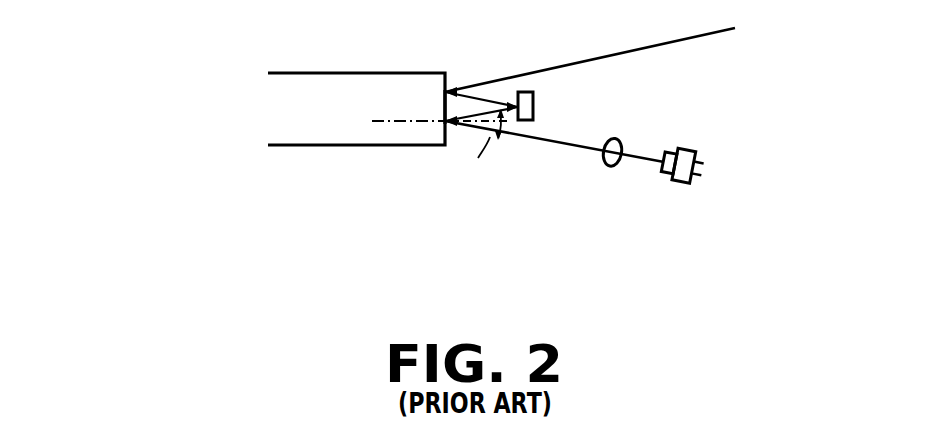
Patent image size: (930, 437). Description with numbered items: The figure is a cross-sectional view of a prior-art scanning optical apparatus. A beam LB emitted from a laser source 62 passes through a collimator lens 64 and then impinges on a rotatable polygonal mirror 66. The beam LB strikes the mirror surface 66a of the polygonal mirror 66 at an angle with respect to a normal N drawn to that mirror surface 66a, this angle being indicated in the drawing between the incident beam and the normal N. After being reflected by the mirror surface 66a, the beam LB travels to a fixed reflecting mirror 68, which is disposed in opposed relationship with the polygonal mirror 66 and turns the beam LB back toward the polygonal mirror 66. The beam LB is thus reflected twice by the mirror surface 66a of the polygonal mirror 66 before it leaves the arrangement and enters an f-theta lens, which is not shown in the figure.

The laser source 62 is at (681, 182).
The collimator lens 64 is at (610, 168).
The rotatable polygonal mirror 66 is at (372, 147).
The mirror surface 66a is at (447, 130).
The fixed reflecting mirror 68 is at (533, 101).
The normal N is at (393, 118).
The beam LB is at (648, 158).